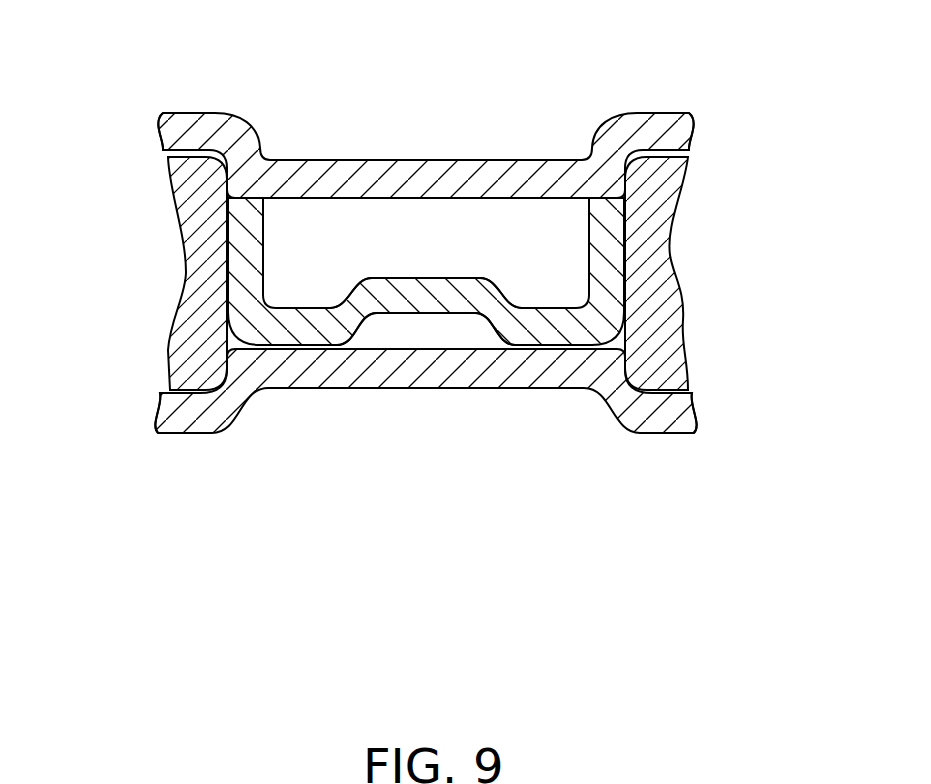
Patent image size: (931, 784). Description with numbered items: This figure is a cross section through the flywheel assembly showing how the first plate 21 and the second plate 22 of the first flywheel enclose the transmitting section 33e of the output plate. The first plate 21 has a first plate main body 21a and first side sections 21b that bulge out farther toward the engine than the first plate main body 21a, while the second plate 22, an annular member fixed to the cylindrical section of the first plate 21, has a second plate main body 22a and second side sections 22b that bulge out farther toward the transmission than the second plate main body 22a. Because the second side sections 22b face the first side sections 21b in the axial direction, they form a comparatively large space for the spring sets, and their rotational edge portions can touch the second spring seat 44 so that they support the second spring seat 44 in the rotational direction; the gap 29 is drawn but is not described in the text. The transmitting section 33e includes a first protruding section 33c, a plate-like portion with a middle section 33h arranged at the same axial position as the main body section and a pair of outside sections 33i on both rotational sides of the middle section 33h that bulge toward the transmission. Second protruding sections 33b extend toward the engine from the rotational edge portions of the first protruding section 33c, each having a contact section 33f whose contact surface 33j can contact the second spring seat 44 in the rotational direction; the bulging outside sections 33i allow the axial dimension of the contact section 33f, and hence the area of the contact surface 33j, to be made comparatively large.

The first plate 21 is at (434, 107).
The first plate main body 21a is at (445, 170).
The first side section 21b is at (188, 125).
The second plate 22 is at (427, 472).
The second plate main body 22a is at (377, 372).
The second side section 22b is at (185, 418).
The gap between first plate flange and outer ring 29 is at (157, 157).
The second protruding section 33b is at (430, 273).
The first protruding section 33c is at (488, 337).
The transmitting section 33e is at (588, 183).
The contact section 33f is at (242, 220).
The middle section 33h is at (430, 300).
The outside section 33i is at (297, 327).
The contact surface 33j is at (215, 276).
The second spring seat 44 is at (160, 383).